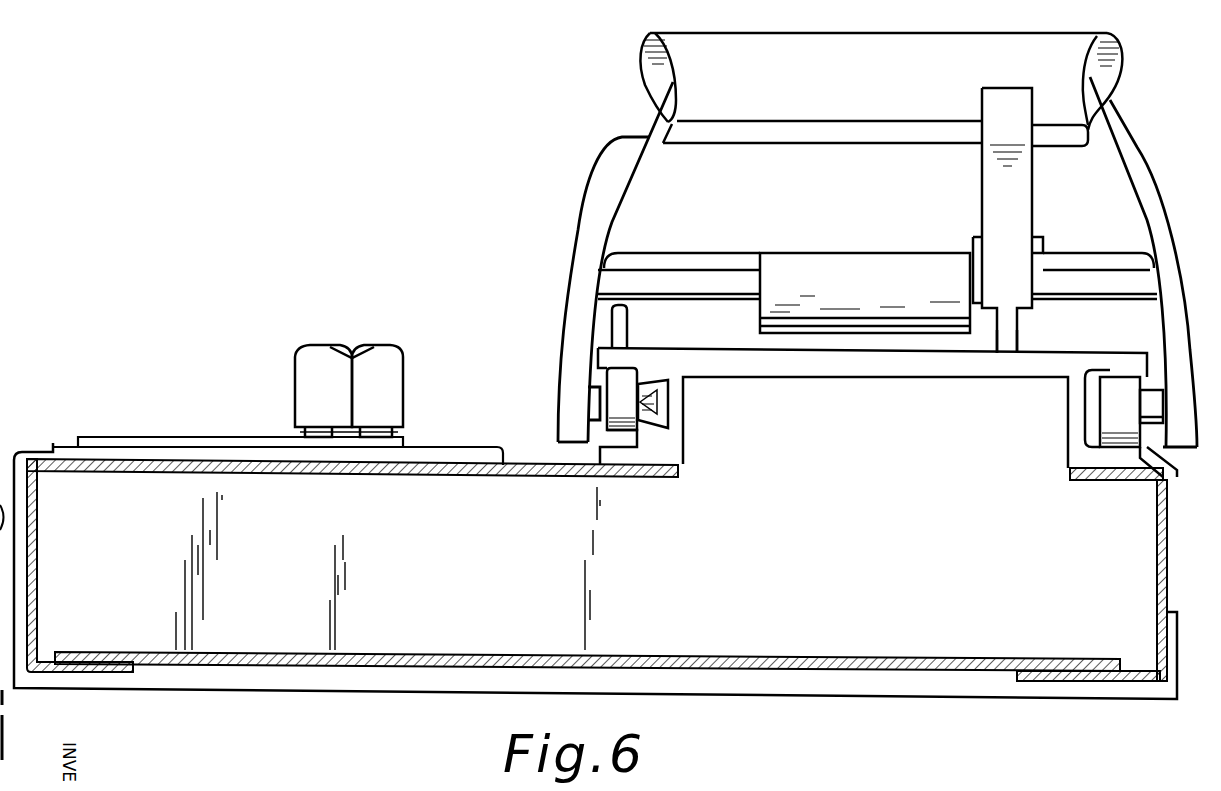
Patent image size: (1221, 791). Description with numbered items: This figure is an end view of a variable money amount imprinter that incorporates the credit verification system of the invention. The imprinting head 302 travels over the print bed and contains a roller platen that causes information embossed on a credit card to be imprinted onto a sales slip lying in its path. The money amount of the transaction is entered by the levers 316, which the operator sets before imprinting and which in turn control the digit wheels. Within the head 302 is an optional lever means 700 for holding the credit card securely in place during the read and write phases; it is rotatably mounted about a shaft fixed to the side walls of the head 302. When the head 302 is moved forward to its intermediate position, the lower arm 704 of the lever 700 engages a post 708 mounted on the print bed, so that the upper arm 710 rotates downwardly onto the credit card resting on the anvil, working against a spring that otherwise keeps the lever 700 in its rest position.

The imprinting head 302 is at (875, 81).
The lever means 700 is at (942, 199).
The lower arm 704 is at (1014, 323).
The post 708 is at (1014, 346).
The upper arm 710 is at (1040, 180).
The levers 316 is at (350, 327).